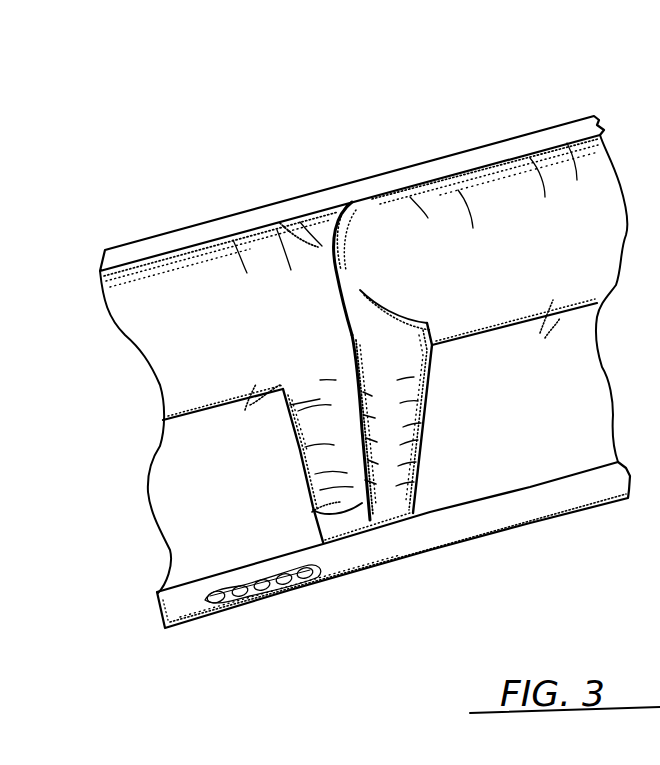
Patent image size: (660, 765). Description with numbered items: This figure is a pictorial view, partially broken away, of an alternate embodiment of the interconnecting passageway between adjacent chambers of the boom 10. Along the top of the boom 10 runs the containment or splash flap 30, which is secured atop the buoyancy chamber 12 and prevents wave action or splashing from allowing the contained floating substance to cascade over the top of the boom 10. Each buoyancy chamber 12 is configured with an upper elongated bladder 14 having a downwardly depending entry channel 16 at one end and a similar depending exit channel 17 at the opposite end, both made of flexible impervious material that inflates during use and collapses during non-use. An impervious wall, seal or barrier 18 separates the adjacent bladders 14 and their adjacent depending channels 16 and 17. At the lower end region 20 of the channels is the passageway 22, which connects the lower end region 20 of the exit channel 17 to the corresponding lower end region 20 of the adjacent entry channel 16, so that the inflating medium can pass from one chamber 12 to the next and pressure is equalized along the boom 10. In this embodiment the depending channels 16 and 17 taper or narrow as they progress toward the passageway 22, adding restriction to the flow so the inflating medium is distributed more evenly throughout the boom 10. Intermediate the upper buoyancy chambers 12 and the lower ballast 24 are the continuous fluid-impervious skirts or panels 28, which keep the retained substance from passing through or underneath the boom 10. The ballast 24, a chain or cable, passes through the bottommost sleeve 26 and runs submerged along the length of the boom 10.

The boom 10 is at (121, 212).
The buoyancy chamber 12 is at (307, 290).
The elongated bladder 14 is at (149, 453).
The entry channel 16 is at (303, 453).
The exit channel 17 is at (430, 423).
The impervious wall 18 is at (362, 289).
The lower end region 20 is at (418, 491).
The passageway 22 is at (322, 517).
The ballast 24 is at (232, 609).
The bottommost sleeve 26 is at (500, 533).
The panel 28 is at (231, 497).
The splash flap 30 is at (530, 131).